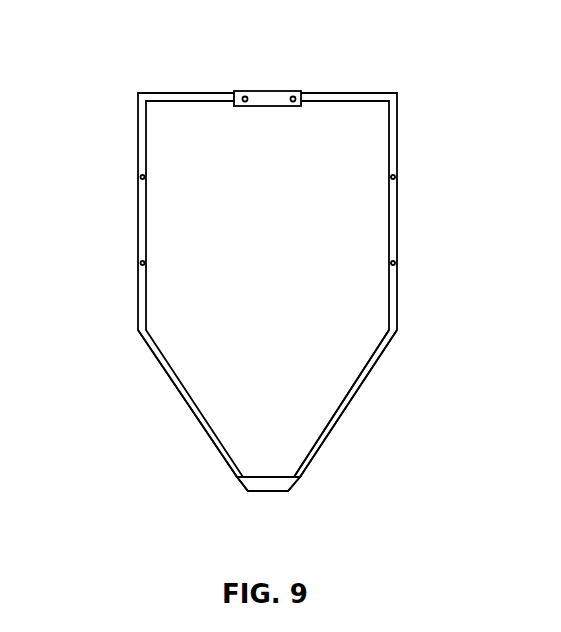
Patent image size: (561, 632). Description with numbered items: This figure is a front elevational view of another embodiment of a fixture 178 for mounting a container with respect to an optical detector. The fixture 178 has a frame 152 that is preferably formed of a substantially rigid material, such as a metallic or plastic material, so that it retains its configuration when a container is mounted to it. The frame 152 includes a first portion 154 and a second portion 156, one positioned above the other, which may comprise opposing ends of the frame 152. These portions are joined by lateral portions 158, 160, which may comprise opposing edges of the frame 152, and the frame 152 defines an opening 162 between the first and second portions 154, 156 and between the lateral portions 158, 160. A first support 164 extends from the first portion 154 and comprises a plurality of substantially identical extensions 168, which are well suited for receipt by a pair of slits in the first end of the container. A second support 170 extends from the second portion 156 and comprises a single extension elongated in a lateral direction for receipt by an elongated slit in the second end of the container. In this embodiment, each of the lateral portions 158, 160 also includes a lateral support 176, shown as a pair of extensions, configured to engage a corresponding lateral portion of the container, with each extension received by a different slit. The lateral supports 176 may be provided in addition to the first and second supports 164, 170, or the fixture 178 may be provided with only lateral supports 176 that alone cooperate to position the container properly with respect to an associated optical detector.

The frame 152 is at (403, 86).
The first portion 154 is at (182, 93).
The second portion 156 is at (270, 491).
The lateral portion 158 is at (140, 340).
The lateral portion 160 is at (393, 343).
The opening 162 is at (342, 380).
The first support 164 is at (301, 88).
The extensions 168 is at (245, 101).
The second support 170 is at (252, 532).
The lateral support 176 is at (141, 178).
The fixture 178 is at (124, 56).